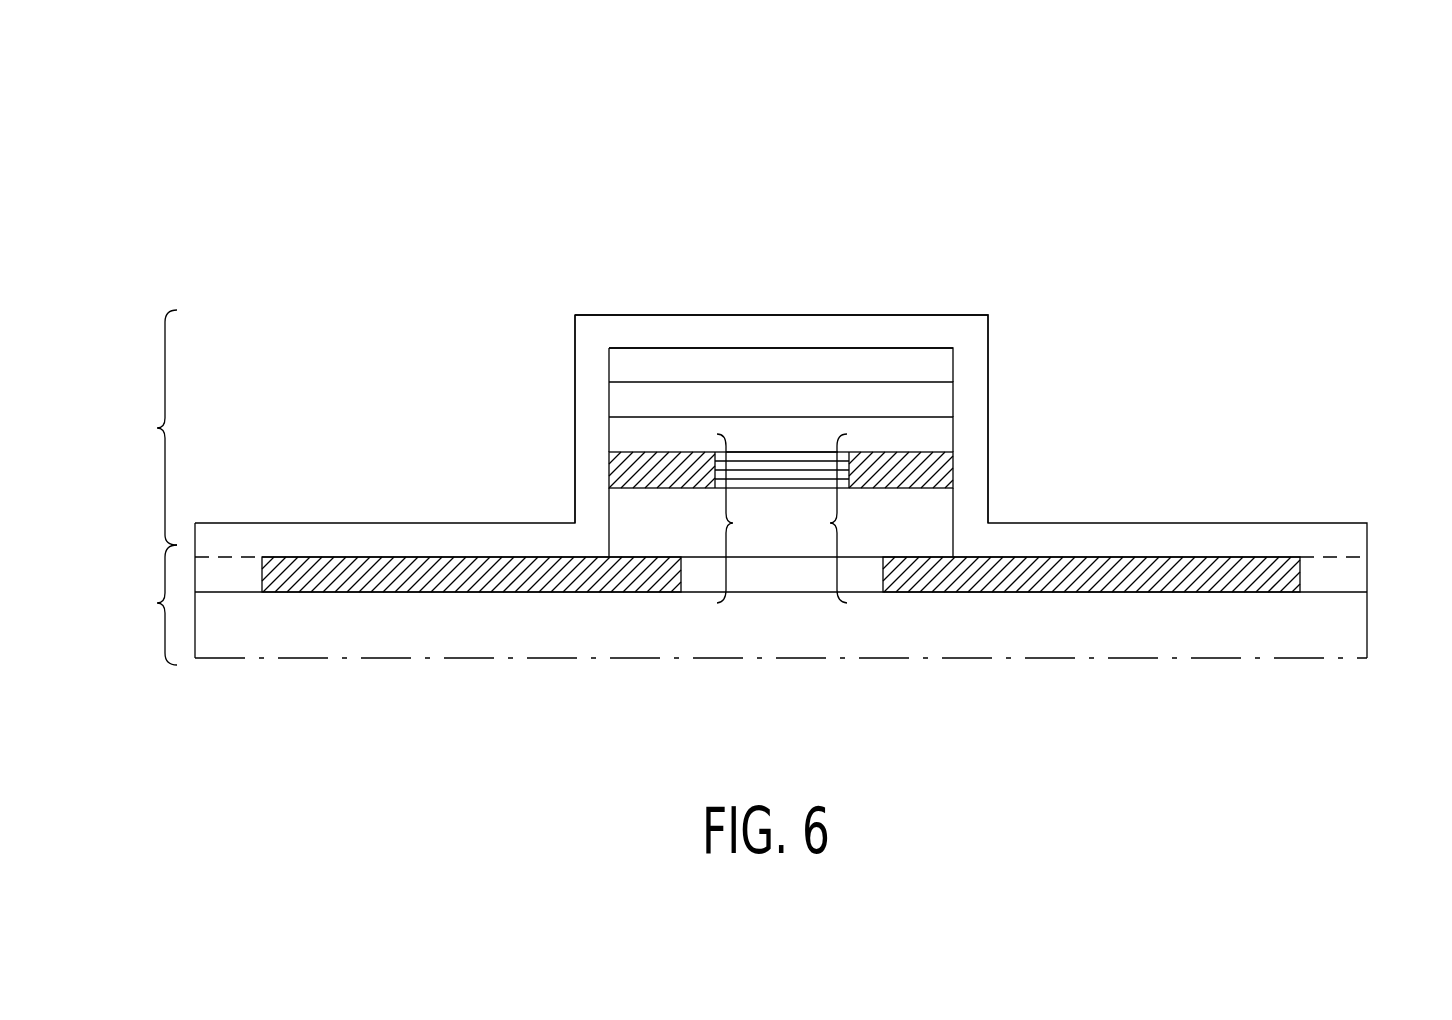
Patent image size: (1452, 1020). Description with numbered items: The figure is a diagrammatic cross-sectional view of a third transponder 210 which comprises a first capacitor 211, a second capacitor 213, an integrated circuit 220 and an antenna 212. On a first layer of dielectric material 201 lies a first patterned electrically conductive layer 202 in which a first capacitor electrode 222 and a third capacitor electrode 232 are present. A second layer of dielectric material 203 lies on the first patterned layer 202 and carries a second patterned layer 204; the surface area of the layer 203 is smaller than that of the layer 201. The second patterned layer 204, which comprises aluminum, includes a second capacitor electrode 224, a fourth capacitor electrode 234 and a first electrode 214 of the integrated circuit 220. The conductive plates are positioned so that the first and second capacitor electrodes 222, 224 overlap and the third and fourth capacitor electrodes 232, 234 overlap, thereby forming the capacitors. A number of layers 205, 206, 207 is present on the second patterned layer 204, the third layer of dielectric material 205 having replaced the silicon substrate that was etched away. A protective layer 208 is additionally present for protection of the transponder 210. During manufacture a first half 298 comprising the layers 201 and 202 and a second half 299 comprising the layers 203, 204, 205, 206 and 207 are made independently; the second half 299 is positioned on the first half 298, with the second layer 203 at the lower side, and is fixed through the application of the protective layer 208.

The first layer of dielectric material 201 is at (1348, 633).
The first patterned electrically conductive layer 202 is at (1348, 575).
The second layer of dielectric material 203 is at (940, 509).
The second patterned layer 204 is at (950, 472).
The third layer of dielectric material 205 is at (940, 435).
The layer 206 is at (940, 405).
The layer 207 is at (940, 365).
The protective layer 208 is at (938, 336).
The third transponder 210 is at (1352, 188).
The first capacitor 211 is at (818, 518).
The antenna 212 is at (1025, 578).
The second capacitor 213 is at (746, 518).
The first electrode of the IC 214 is at (789, 465).
The integrated circuit 220 is at (748, 435).
The first capacitor electrode 222 is at (1082, 577).
The second capacitor electrode 224 is at (902, 470).
The third capacitor electrode 232 is at (397, 576).
The fourth capacitor electrode 234 is at (651, 462).
The first half 298 is at (147, 605).
The second half 299 is at (147, 427).